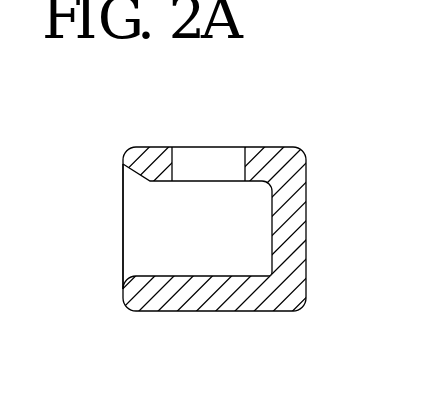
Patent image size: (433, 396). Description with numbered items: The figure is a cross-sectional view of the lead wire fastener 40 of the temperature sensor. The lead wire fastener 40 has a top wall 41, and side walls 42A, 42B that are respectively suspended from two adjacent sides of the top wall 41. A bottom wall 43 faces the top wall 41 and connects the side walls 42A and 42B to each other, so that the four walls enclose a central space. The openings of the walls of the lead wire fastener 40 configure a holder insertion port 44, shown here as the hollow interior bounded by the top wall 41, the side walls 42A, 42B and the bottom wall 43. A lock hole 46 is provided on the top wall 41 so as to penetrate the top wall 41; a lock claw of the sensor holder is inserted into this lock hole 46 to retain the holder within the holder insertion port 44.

The lead wire fastener 40 is at (300, 152).
The top wall 41 is at (148, 146).
The side wall 42A is at (122, 202).
The side wall 42B is at (306, 199).
The bottom wall 43 is at (203, 312).
The holder insertion port 44 is at (137, 232).
The lock hole 46 is at (231, 160).